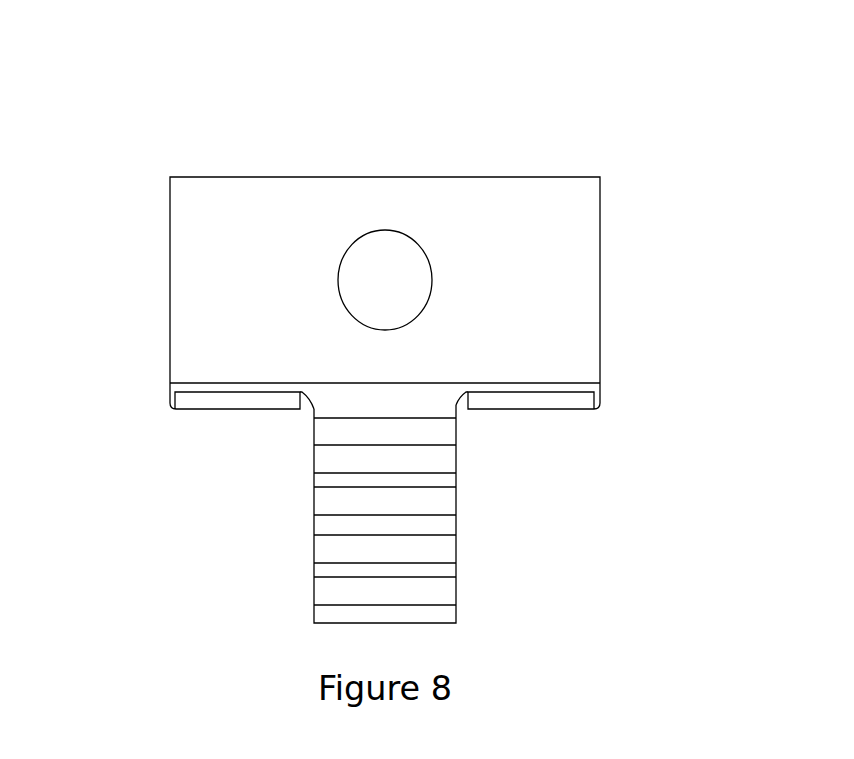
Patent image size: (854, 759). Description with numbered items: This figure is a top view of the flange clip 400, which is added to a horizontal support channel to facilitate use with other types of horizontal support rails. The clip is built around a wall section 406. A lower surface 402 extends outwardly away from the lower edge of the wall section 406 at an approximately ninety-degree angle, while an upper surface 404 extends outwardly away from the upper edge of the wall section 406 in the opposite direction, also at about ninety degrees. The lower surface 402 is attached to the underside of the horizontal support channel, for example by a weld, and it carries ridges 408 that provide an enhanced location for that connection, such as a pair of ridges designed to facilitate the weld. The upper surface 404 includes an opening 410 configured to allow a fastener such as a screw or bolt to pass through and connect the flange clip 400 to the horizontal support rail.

The flange clip 400 is at (197, 143).
The lower surface 402 is at (297, 513).
The upper surface 404 is at (540, 307).
The wall section 406 is at (457, 405).
The ridge 408 is at (438, 500).
The opening 410 is at (398, 233).